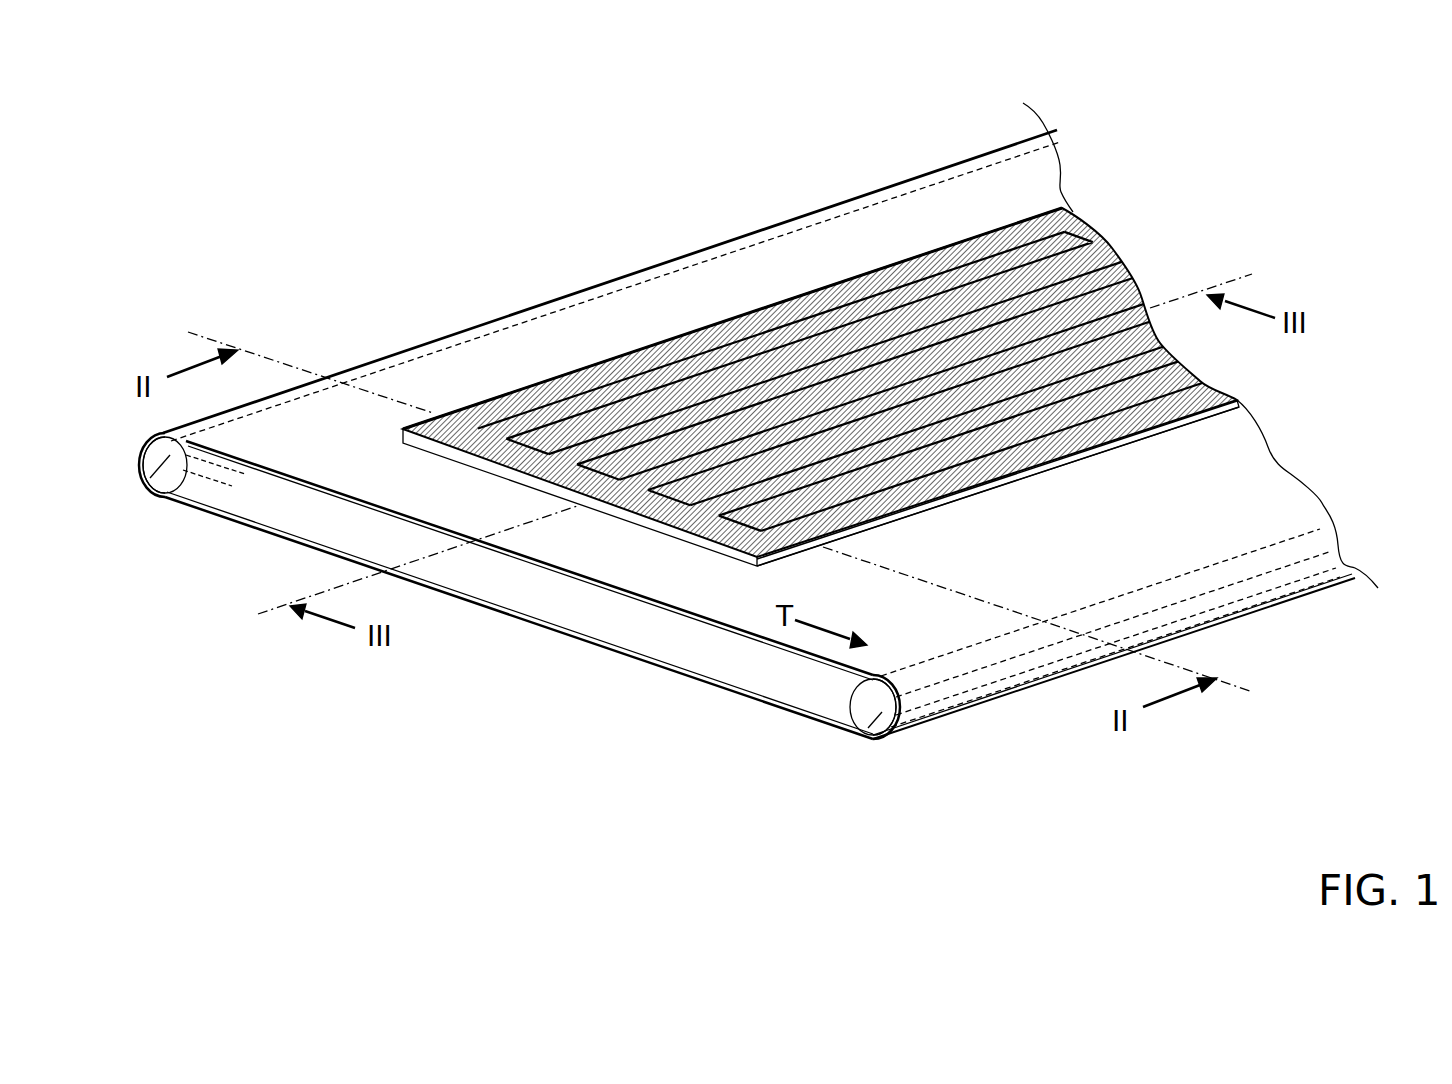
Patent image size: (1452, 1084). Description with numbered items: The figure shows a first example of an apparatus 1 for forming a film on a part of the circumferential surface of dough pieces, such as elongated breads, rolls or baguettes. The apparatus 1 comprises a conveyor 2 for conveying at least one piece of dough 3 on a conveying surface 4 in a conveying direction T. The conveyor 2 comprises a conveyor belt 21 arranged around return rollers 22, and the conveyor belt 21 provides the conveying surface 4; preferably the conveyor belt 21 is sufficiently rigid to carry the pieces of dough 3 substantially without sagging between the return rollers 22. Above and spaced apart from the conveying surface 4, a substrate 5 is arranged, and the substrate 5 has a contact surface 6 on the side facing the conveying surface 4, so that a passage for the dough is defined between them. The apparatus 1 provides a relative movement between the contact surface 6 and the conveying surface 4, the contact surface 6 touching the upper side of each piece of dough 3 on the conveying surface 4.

The apparatus 1 is at (566, 178).
The conveyor 2 is at (748, 706).
The conveyor belt 21 is at (338, 492).
The return rollers 22 is at (161, 487).
The piece of dough 3 is at (793, 553).
The conveying surface 4 is at (1032, 563).
The substrate 5 is at (1103, 252).
The contact surface 6 is at (1205, 428).